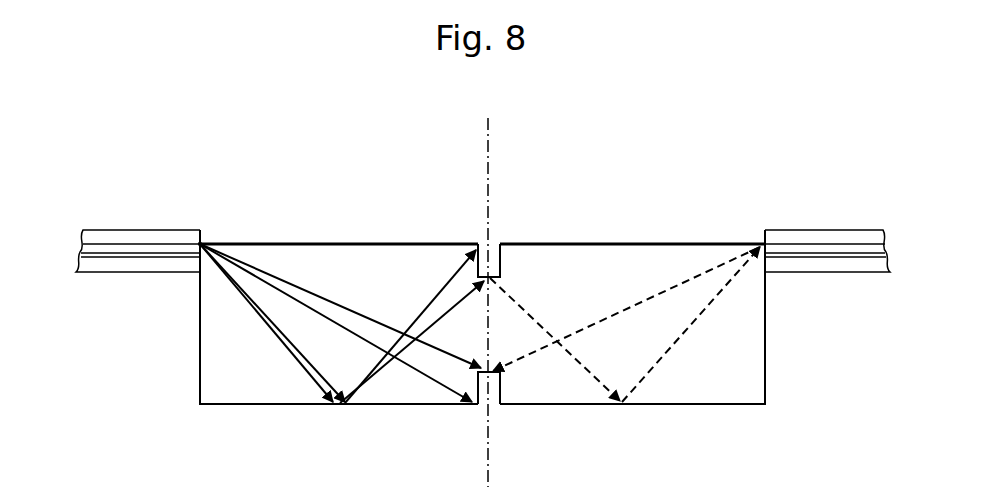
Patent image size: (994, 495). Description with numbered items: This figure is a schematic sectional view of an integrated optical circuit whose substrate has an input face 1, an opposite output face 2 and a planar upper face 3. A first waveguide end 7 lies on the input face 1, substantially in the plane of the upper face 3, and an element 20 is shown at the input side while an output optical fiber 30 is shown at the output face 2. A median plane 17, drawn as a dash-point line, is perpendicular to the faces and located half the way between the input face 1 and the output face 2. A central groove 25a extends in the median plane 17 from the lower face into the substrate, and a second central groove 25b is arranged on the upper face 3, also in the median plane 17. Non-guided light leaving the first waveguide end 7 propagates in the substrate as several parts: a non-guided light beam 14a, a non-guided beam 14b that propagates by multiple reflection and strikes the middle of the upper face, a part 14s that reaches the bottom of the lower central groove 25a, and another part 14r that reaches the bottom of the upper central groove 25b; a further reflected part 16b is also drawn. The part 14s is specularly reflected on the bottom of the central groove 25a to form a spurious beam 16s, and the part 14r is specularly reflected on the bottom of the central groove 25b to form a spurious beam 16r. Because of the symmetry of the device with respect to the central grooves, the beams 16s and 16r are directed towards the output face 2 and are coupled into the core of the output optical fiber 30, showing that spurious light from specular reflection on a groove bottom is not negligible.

The input face 1 is at (200, 360).
The output face 2 is at (767, 330).
The upper face 3 is at (700, 244).
The first waveguide end 7 is at (203, 247).
The non-guided light beam 14a is at (273, 290).
The non-guided beam 14b is at (293, 355).
The non-guided light beam 14r is at (320, 377).
The non-guided light beam 14s is at (322, 297).
The reflected light beam 16b is at (420, 308).
The specular-reflection spurious beam 16s is at (628, 312).
The specular-reflection spurious beam 16r is at (680, 337).
The median plane 17 is at (487, 160).
The left layered element 20 is at (105, 235).
The central groove on the lower face 25a is at (493, 380).
The central groove on the upper face 25b is at (495, 270).
The output optical fiber 30 is at (818, 235).